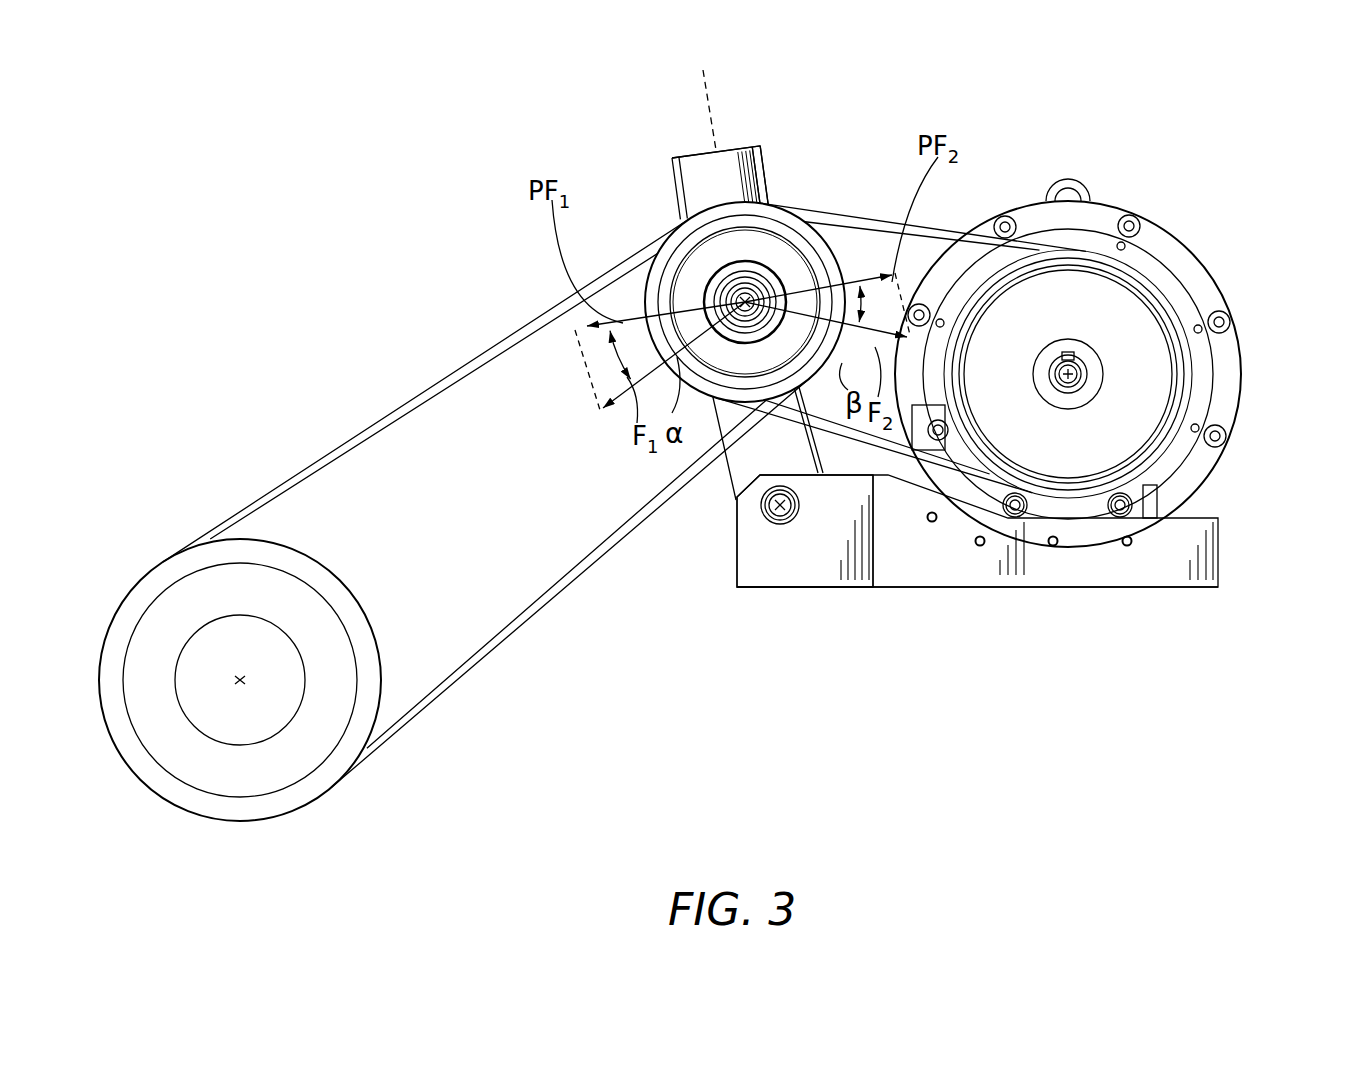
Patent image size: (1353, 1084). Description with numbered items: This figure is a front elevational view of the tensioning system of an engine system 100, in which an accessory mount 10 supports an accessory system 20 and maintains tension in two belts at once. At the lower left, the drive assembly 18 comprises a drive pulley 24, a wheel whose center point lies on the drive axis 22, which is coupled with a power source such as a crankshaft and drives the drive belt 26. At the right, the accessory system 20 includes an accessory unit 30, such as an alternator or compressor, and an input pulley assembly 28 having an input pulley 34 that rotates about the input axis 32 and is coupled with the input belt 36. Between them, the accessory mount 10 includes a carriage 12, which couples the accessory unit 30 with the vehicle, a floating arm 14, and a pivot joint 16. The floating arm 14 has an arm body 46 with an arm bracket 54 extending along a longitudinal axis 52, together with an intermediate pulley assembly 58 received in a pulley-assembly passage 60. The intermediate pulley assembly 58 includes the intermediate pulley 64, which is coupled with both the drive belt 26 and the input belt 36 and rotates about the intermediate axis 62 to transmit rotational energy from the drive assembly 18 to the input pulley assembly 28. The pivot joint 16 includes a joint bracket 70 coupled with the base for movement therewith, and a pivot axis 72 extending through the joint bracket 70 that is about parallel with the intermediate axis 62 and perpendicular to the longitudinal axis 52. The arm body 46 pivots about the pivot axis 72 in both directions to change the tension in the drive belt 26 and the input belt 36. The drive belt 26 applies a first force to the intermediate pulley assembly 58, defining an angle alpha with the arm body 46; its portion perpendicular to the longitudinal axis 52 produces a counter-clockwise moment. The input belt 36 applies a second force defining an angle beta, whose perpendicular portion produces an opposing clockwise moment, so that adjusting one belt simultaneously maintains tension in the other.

The accessory mount 10 is at (720, 592).
The carriage 12 is at (1226, 548).
The floating arm 14 is at (660, 181).
The pivot joint 16 is at (815, 550).
The drive assembly 18 is at (265, 648).
The accessory system 20 is at (1101, 375).
The drive axis 22 is at (243, 685).
The drive pulley 24 is at (362, 637).
The drive belt 26 is at (330, 472).
The input pulley assembly 28 is at (1117, 428).
The accessory unit 30 is at (1243, 378).
The input axis 32 is at (1058, 356).
The input pulley 34 is at (1073, 287).
The input belt 36 is at (862, 226).
The arm body 46 is at (768, 181).
The longitudinal axis 52 is at (712, 100).
The arm bracket 54 is at (750, 158).
The intermediate pulley assembly 58 is at (740, 362).
The pulley-assembly passage 60 is at (726, 322).
The intermediate axis 62 is at (780, 290).
The intermediate pulley 64 is at (768, 345).
The joint bracket 70 is at (838, 520).
The pivot axis 72 is at (762, 508).
The engine system 100 is at (992, 130).